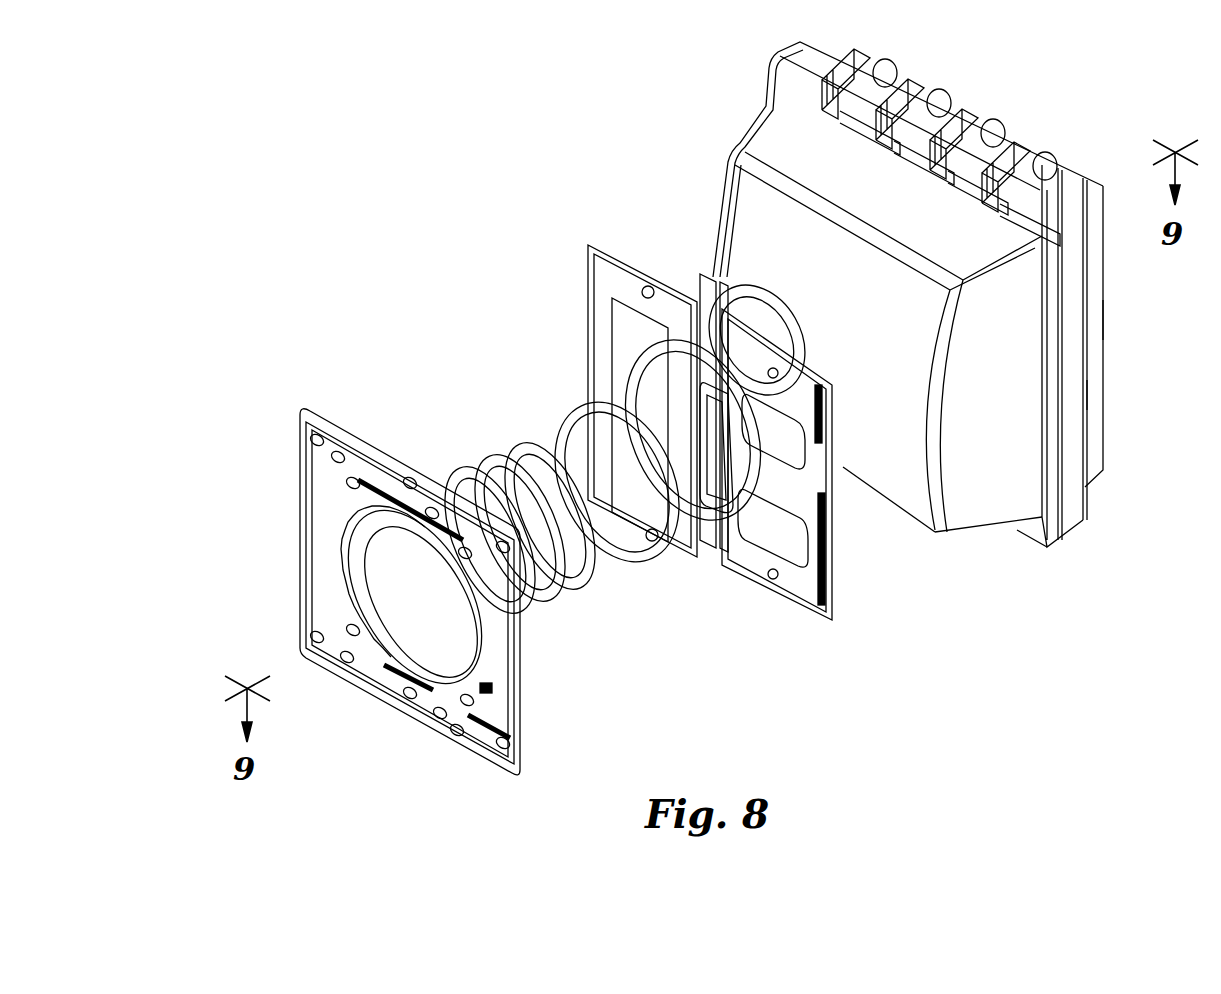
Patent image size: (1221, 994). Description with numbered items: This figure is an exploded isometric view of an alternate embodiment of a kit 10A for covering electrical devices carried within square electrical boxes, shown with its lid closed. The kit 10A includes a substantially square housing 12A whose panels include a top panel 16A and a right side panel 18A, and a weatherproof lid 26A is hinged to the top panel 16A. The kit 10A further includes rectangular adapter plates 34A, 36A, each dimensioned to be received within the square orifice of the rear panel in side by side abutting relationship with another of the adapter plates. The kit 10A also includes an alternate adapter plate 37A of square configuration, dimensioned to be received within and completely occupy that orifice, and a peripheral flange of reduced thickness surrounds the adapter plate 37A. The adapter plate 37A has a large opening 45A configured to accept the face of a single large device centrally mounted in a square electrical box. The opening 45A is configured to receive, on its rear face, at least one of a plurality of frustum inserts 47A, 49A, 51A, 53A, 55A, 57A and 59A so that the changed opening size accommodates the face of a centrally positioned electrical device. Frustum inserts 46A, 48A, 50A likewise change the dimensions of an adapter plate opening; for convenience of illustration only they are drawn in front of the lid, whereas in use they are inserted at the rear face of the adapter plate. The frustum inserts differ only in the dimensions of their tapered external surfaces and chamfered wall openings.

The kit 10A is at (537, 226).
The housing 12A is at (1103, 315).
The top panel 16A is at (1072, 178).
The right side panel 18A is at (1093, 395).
The weatherproof lid 26A is at (897, 316).
The adapter plate 34A is at (806, 597).
The adapter plate 36A is at (600, 307).
The alternate adapter plate 37A is at (323, 572).
The large opening 45A is at (362, 547).
The frustum insert 46A is at (705, 297).
The frustum insert 47A is at (382, 522).
The frustum insert 48A is at (708, 300).
The frustum insert 49A is at (540, 603).
The frustum insert 50A is at (750, 284).
The frustum insert 51A is at (572, 575).
The frustum insert 53A is at (585, 555).
The frustum insert 55A is at (607, 432).
The frustum insert 57A is at (628, 403).
The frustum insert 59A is at (718, 513).